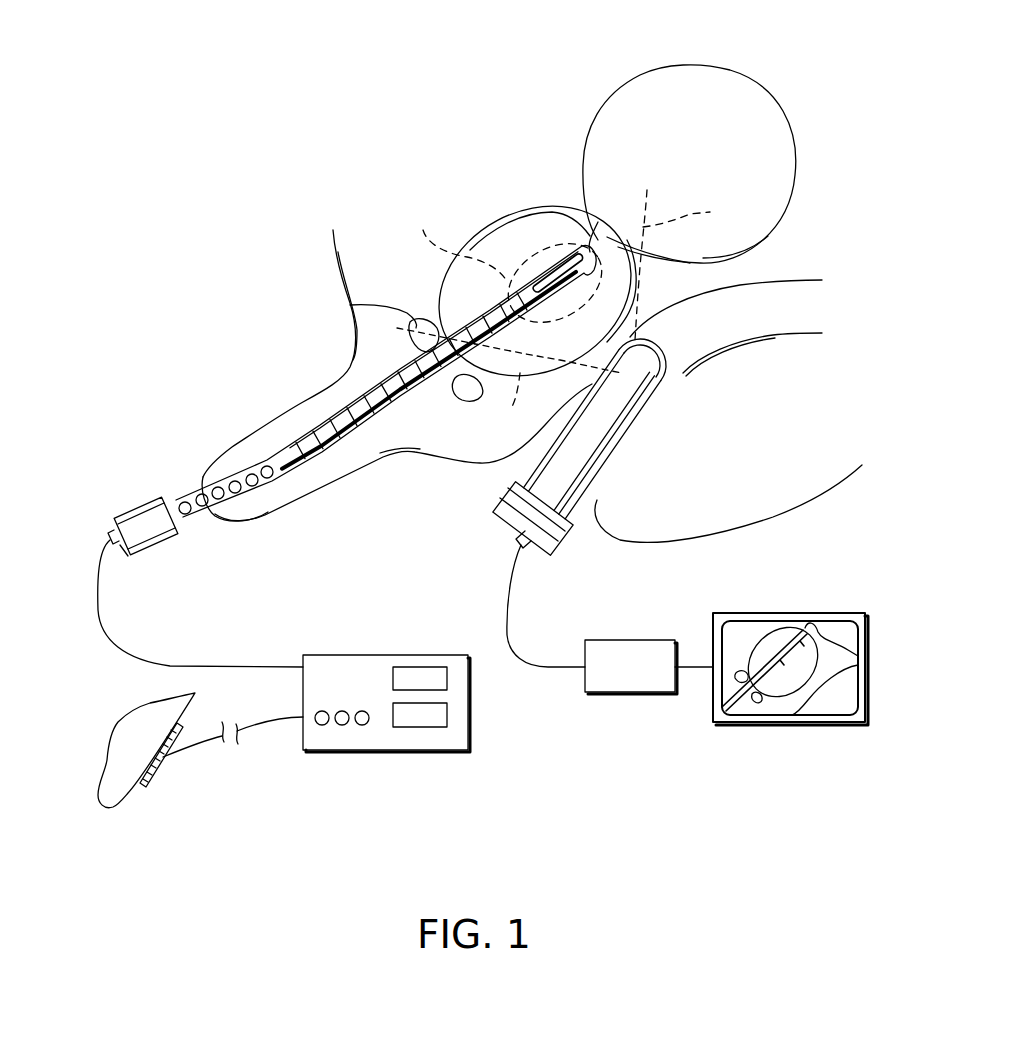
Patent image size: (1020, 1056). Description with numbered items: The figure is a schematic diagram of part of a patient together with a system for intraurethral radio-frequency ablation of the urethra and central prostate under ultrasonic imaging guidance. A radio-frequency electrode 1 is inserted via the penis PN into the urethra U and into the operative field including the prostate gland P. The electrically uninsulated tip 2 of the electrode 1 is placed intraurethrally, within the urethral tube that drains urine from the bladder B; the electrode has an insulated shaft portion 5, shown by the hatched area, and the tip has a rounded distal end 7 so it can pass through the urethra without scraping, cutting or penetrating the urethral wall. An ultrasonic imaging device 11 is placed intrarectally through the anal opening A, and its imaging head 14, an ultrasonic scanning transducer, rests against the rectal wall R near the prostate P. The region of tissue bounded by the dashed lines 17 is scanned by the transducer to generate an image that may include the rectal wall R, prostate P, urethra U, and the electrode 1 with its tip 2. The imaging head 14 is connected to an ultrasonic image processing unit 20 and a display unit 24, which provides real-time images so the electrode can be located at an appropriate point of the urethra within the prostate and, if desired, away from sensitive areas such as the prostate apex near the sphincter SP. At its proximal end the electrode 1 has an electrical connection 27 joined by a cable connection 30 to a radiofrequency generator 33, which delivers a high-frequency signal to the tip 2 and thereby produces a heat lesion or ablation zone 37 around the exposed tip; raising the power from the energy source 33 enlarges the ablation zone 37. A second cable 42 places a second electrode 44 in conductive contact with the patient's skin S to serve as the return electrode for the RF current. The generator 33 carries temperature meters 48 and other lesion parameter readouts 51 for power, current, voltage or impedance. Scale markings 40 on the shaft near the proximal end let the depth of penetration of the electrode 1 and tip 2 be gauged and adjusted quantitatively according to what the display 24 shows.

The radio-frequency electrode 1 is at (398, 393).
The electrode tip 2 is at (494, 238).
The insulated shaft portion 5 is at (300, 451).
The rounded distal end 7 is at (532, 211).
The ultrasonic imaging device 11 is at (490, 462).
The imaging head 14 is at (683, 373).
The dashed lines 17 is at (510, 410).
The ultrasonic image processing unit 20 is at (623, 693).
The display unit 24 is at (783, 723).
The electrical connection 27 is at (155, 548).
The cable connection 30 is at (192, 666).
The radiofrequency generator 33 is at (348, 655).
The ablation zone 37 is at (456, 242).
The scale markings 40 is at (172, 490).
The second cable 42 is at (252, 732).
The second electrode 44 is at (155, 775).
The temperature meters 48 is at (422, 667).
The lesion parameter readouts 51 is at (420, 727).
The bladder B is at (657, 68).
The urethra U is at (587, 217).
The prostate gland P is at (446, 292).
The sphincter SP is at (350, 305).
The penis PN is at (240, 439).
The rectal wall R is at (647, 322).
The anal opening A is at (505, 464).
The skin S is at (115, 797).